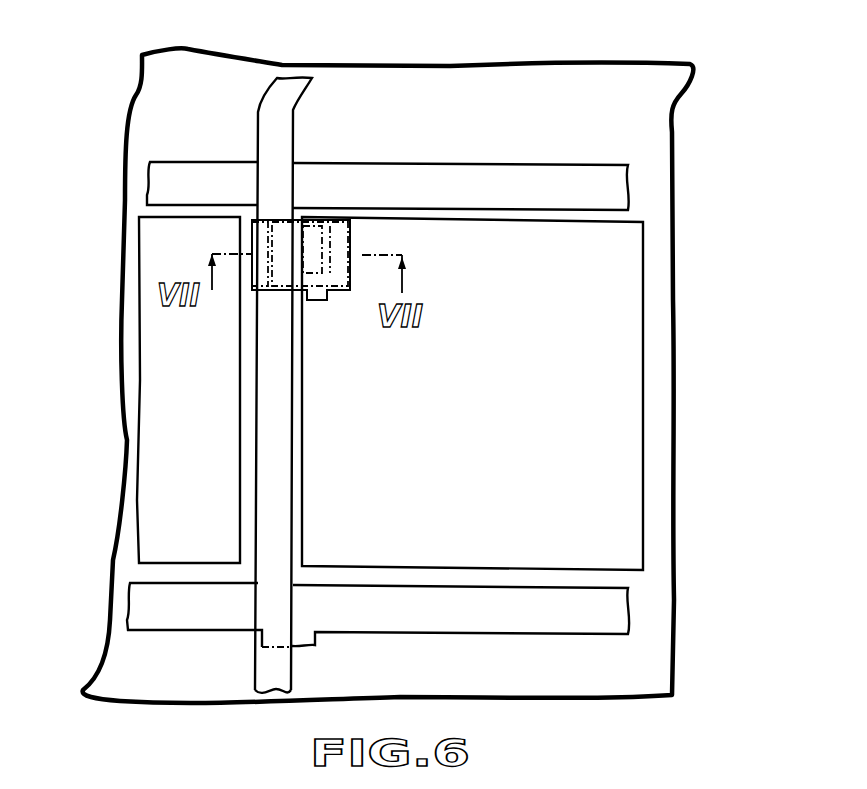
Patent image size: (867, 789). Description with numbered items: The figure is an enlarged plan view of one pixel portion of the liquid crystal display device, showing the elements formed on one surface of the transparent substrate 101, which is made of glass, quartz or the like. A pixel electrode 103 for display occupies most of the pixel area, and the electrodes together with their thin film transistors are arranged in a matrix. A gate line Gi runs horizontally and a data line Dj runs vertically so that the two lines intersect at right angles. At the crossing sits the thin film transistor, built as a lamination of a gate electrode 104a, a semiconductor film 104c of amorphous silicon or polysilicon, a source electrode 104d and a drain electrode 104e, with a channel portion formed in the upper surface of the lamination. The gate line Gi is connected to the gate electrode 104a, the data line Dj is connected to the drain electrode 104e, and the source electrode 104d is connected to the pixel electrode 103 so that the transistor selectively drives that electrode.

The transparent substrate 101 is at (617, 103).
The pixel electrode 103 is at (607, 335).
The gate line Gi is at (455, 190).
The data line Dj is at (290, 92).
The gate electrode 104a is at (253, 285).
The semiconductor film 104c is at (272, 288).
The source electrode 104d is at (317, 220).
The drain electrode 104e is at (245, 220).